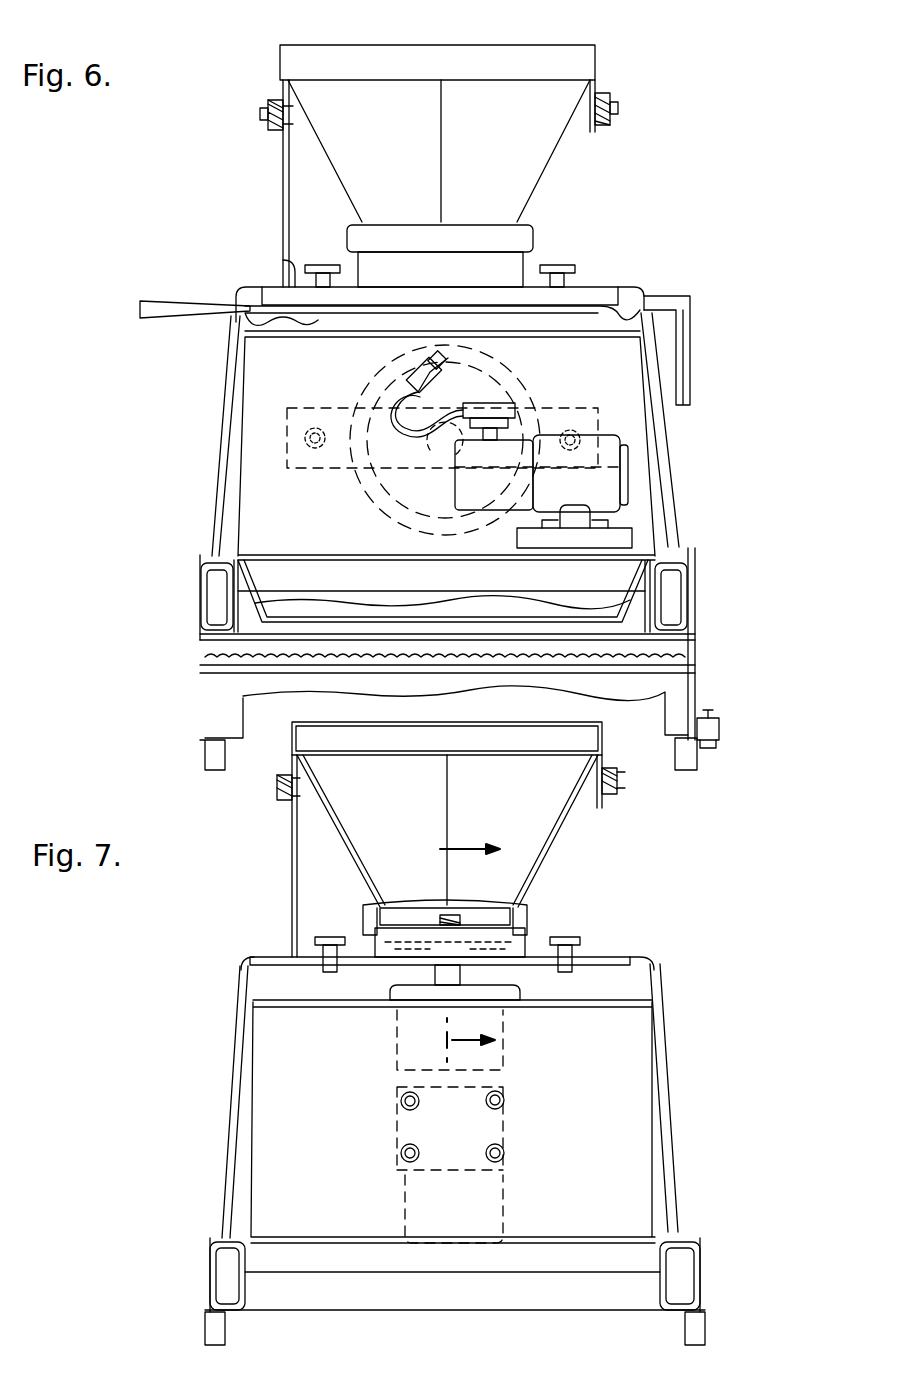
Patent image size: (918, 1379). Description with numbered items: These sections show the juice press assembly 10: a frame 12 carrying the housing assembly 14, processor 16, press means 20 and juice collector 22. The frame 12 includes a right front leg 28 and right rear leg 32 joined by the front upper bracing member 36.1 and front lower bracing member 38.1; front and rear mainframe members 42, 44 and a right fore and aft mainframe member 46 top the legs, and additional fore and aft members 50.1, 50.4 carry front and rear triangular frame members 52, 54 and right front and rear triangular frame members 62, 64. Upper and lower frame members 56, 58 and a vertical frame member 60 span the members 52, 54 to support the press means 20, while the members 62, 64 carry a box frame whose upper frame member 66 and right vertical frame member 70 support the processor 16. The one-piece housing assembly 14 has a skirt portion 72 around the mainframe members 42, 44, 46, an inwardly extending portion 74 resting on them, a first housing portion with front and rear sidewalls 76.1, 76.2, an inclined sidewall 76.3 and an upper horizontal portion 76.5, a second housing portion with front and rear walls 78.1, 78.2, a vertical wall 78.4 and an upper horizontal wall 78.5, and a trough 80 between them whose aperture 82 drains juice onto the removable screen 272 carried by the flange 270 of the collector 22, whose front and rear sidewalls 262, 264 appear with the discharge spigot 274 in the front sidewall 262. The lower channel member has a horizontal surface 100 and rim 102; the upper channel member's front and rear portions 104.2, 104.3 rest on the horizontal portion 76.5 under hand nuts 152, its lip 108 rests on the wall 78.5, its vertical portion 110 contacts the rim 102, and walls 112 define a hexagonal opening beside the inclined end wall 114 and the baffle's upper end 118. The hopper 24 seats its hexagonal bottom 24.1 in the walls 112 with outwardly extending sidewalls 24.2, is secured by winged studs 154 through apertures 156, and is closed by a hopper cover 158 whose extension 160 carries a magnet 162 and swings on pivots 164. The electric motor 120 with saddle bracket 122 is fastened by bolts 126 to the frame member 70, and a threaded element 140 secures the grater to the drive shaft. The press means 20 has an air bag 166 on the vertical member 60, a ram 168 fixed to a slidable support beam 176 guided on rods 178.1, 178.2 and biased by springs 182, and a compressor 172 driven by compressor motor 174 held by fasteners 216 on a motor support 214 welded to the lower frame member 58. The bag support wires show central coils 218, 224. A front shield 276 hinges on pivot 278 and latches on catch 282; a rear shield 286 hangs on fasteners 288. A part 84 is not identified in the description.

In FIG. 6, the fruit and vegetable juice press assembly 10 is at (780, 78).
In FIG. 7, the fruit and vegetable juice press assembly 10 is at (817, 858).
In FIG. 6, the frame 12 is at (752, 684).
In FIG. 7, the frame 12 is at (747, 1309).
In FIG. 6, the housing assembly 14 is at (195, 383).
In FIG. 7, the housing assembly 14 is at (223, 1000).
In FIG. 7, the processor 16 is at (331, 1080).
In FIG. 6, the press means 20 is at (277, 496).
In FIG. 6, the juice collector 22 is at (712, 638).
In FIG. 6, the hopper 24 is at (330, 166).
In FIG. 7, the hopper 24 is at (345, 835).
In FIG. 7, the lower hexagonal opening 24.1 is at (520, 880).
In FIG. 6, the upwardly and outwardly extending sidewall portions 24.2 is at (545, 166).
In FIG. 7, the upwardly and outwardly extending sidewall portions 24.2 is at (572, 826).
In FIG. 6, the right front vertical leg 28 is at (700, 766).
In FIG. 7, the right front vertical leg 28 is at (705, 1328).
In FIG. 6, the right rear leg 32 is at (215, 766).
In FIG. 7, the right rear leg 32 is at (210, 1326).
In FIG. 6, the front laterally extending frame member 36.1 is at (706, 750).
In FIG. 6, the front member of lower bracing frame assembly 38.1 is at (200, 746).
In FIG. 6, the front mainframe member 42 is at (697, 600).
In FIG. 7, the front mainframe member 42 is at (706, 1286).
In FIG. 6, the rear mainframe member 44 is at (220, 600).
In FIG. 7, the rear mainframe member 44 is at (222, 1292).
In FIG. 6, the right fore and aft mainframe member 46 is at (610, 690).
In FIG. 7, the right fore and aft mainframe member 46 is at (520, 1306).
In FIG. 6, the additional fore and aft frame member 50.1 is at (315, 552).
In FIG. 7, the additional fore and aft frame member 50.4 is at (320, 1272).
In FIG. 6, the front triangular frame member 52 is at (660, 500).
In FIG. 6, the rear triangular frame member 54 is at (240, 520).
In FIG. 6, the upper frame member 56 is at (560, 340).
In FIG. 6, the lower frame member 58 is at (412, 560).
In FIG. 6, the fore and aft extending vertical frame member 60 is at (266, 364).
In FIG. 7, the right front triangular frame member 62 is at (676, 1160).
In FIG. 7, the right rear triangular frame member 64 is at (230, 1175).
In FIG. 7, the upper frame member of box frame assembly 66 is at (272, 1012).
In FIG. 7, the right vertical frame member 70 is at (549, 1165).
In FIG. 6, the skirt portion 72 is at (690, 572).
In FIG. 7, the skirt portion 72 is at (700, 1262).
In FIG. 6, the inwardly extending portion 74 is at (692, 550).
In FIG. 7, the inwardly extending portion 74 is at (690, 1226).
In FIG. 7, the front sidewall of first housing portion 76.1 is at (680, 1135).
In FIG. 7, the rear sidewall of first housing portion 76.2 is at (230, 1145).
In FIG. 7, the right-hand inclined sidewall 76.3 is at (662, 1190).
In FIG. 7, the upper horizontal portion 76.5 is at (660, 960).
In FIG. 6, the front wall of second housing portion 78.1 is at (660, 460).
In FIG. 6, the rear wall of second housing portion 78.2 is at (235, 470).
In FIG. 6, the right vertical wall of second housing portion 78.4 is at (665, 482).
In FIG. 6, the upper horizontal wall of second housing portion 78.5 is at (318, 330).
In FIG. 6, the trough 80 is at (490, 582).
In FIG. 6, the aperture 82 is at (292, 592).
In FIG. 7, the bracket 84 is at (405, 905).
In FIG. 7, the lower horizontal surface 100 is at (382, 988).
In FIG. 7, the vertically extending horseshoe-shaped rim 102 is at (510, 977).
In FIG. 7, the front portion of lower horizontal portion 104.2 is at (620, 950).
In FIG. 7, the rear portion of lower horizontal portion 104.3 is at (285, 950).
In FIG. 6, the downwardly extending lip 108 is at (400, 306).
In FIG. 6, the generally vertical portion 110 is at (530, 265).
In FIG. 7, the generally vertical portion 110 is at (525, 930).
In FIG. 7, the vertically extending walls 112 is at (500, 905).
In FIG. 6, the left-hand end wall 114 is at (478, 265).
In FIG. 6, the upper end of baffle 118 is at (400, 240).
In FIG. 7, the electric motor 120 is at (395, 1002).
In FIG. 7, the saddle bracket 122 is at (398, 1188).
In FIG. 7, the bolts 126 is at (505, 1152).
In FIG. 7, the threaded element 140 is at (450, 915).
In FIG. 6, the threaded elements 152 is at (563, 265).
In FIG. 7, the threaded elements 152 is at (570, 937).
In FIG. 7, the winged studs 154 is at (560, 896).
In FIG. 7, the apertures 156 is at (358, 915).
In FIG. 6, the hopper cover 158 is at (468, 45).
In FIG. 6, the hopper cover extension 160 is at (283, 150).
In FIG. 7, the hopper cover extension 160 is at (290, 820).
In FIG. 6, the magnet 162 is at (283, 258).
In FIG. 7, the magnet 162 is at (312, 976).
In FIG. 6, the pivots 164 is at (660, 101).
In FIG. 7, the pivots 164 is at (625, 786).
In FIG. 6, the air bag 166 is at (358, 392).
In FIG. 6, the ram 168 is at (510, 475).
In FIG. 6, the compressor 172 is at (400, 508).
In FIG. 6, the compressor motor 174 is at (608, 405).
In FIG. 6, the slidable support beam 176 is at (255, 480).
In FIG. 6, the horizontal support rod 178.1 is at (580, 473).
In FIG. 6, the horizontal support rod 178.2 is at (345, 498).
In FIG. 6, the spring 182 is at (300, 445).
In FIG. 6, the motor support 214 is at (520, 550).
In FIG. 6, the fasteners 216 is at (622, 522).
In FIG. 6, the central coil portion 218 is at (152, 300).
In FIG. 6, the central coil 224 is at (692, 380).
In FIG. 6, the front sidewall 262 is at (700, 651).
In FIG. 6, the rear sidewall 264 is at (215, 656).
In FIG. 6, the inwardly extending flange 270 is at (210, 676).
In FIG. 6, the removable screen 272 is at (305, 666).
In FIG. 6, the discharge spigot 274 is at (725, 720).
In FIG. 6, the clear plastic shield 276 is at (668, 440).
In FIG. 6, the pivot 278 is at (700, 318).
In FIG. 6, the catch 282 is at (668, 414).
In FIG. 6, the rear shield 286 is at (228, 352).
In FIG. 6, the fasteners 288 is at (225, 412).